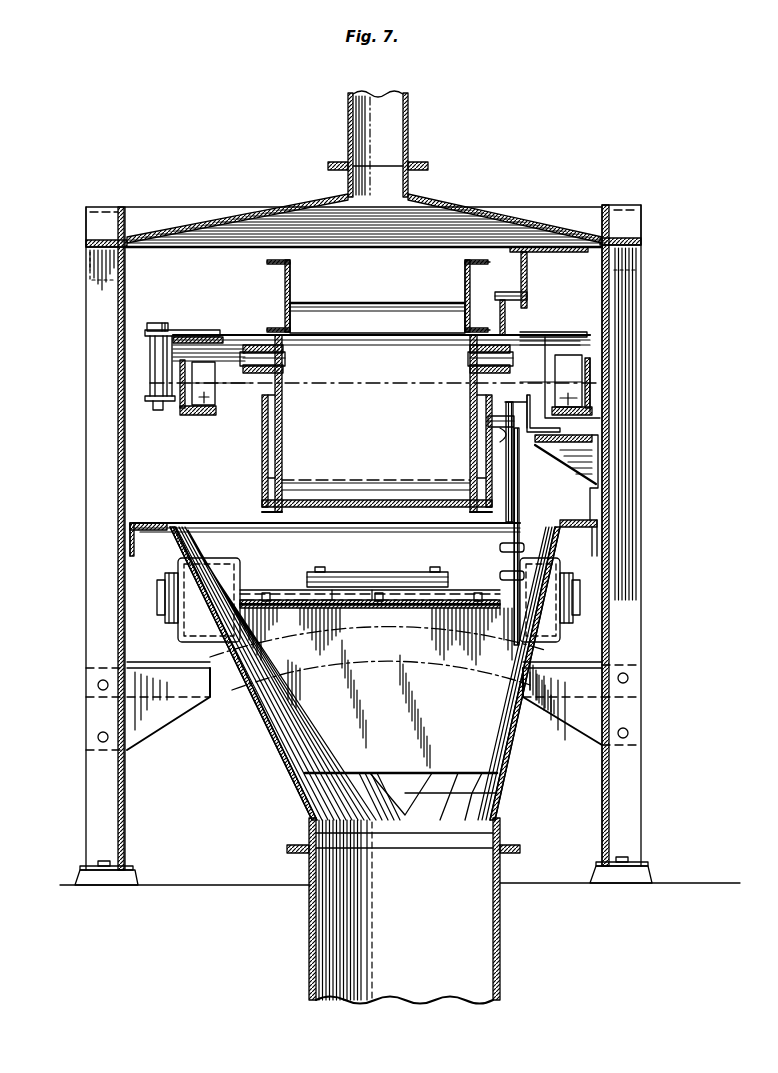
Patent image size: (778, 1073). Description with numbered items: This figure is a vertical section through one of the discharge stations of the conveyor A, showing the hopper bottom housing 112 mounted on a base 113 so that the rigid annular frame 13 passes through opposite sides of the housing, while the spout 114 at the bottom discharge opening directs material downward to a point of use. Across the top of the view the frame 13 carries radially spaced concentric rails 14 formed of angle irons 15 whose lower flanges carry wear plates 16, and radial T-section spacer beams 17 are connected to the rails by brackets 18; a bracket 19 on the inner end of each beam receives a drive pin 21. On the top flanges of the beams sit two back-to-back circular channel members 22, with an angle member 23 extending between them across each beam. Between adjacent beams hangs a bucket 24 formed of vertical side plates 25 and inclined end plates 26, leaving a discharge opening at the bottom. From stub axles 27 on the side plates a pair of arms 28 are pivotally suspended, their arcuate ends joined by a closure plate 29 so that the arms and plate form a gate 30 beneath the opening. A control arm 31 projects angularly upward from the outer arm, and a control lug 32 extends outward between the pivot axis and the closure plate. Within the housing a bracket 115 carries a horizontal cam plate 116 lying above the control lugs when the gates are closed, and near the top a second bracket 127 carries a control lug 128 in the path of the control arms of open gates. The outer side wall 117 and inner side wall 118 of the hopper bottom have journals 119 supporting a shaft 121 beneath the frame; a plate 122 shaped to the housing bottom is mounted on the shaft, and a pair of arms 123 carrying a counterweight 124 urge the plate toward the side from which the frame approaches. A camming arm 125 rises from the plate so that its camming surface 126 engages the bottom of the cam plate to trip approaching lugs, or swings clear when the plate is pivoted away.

The base 113 is at (641, 607).
The hopper bottom housing 112 is at (190, 235).
The second bracket 127 is at (527, 276).
The control lug 128 is at (526, 296).
The control arm 31 is at (505, 322).
The channel member 22 is at (286, 268).
The angle member 23 is at (356, 301).
The conveyor A is at (414, 302).
The annular frame 13 is at (243, 334).
The stub axle 27 is at (288, 356).
The side plate 25 is at (283, 422).
The bucket 24 is at (272, 450).
The arm 28 is at (262, 466).
The closure plate 29 is at (397, 499).
The end plate 26 is at (372, 500).
The gate 30 is at (430, 510).
The drive pin 21 is at (158, 322).
The bracket 19 is at (190, 330).
The angle iron 15 is at (180, 376).
The rail 14 is at (178, 410).
The bracket 18 is at (215, 398).
The wear plate 16 is at (190, 416).
The spacer beam 17 is at (560, 334).
The cam plate 116 is at (512, 396).
The bracket 115 is at (592, 466).
The camming surface 126 is at (490, 421).
The control lug 32 is at (513, 452).
The camming arm 125 is at (518, 508).
The inner side wall 118 is at (278, 746).
The outer side wall 117 is at (512, 742).
The plate 122 is at (282, 704).
The spout 114 is at (500, 906).
The journal 119 is at (160, 620).
The shaft 121 is at (228, 592).
The counterweight 124 is at (332, 572).
The arm 123 is at (342, 605).